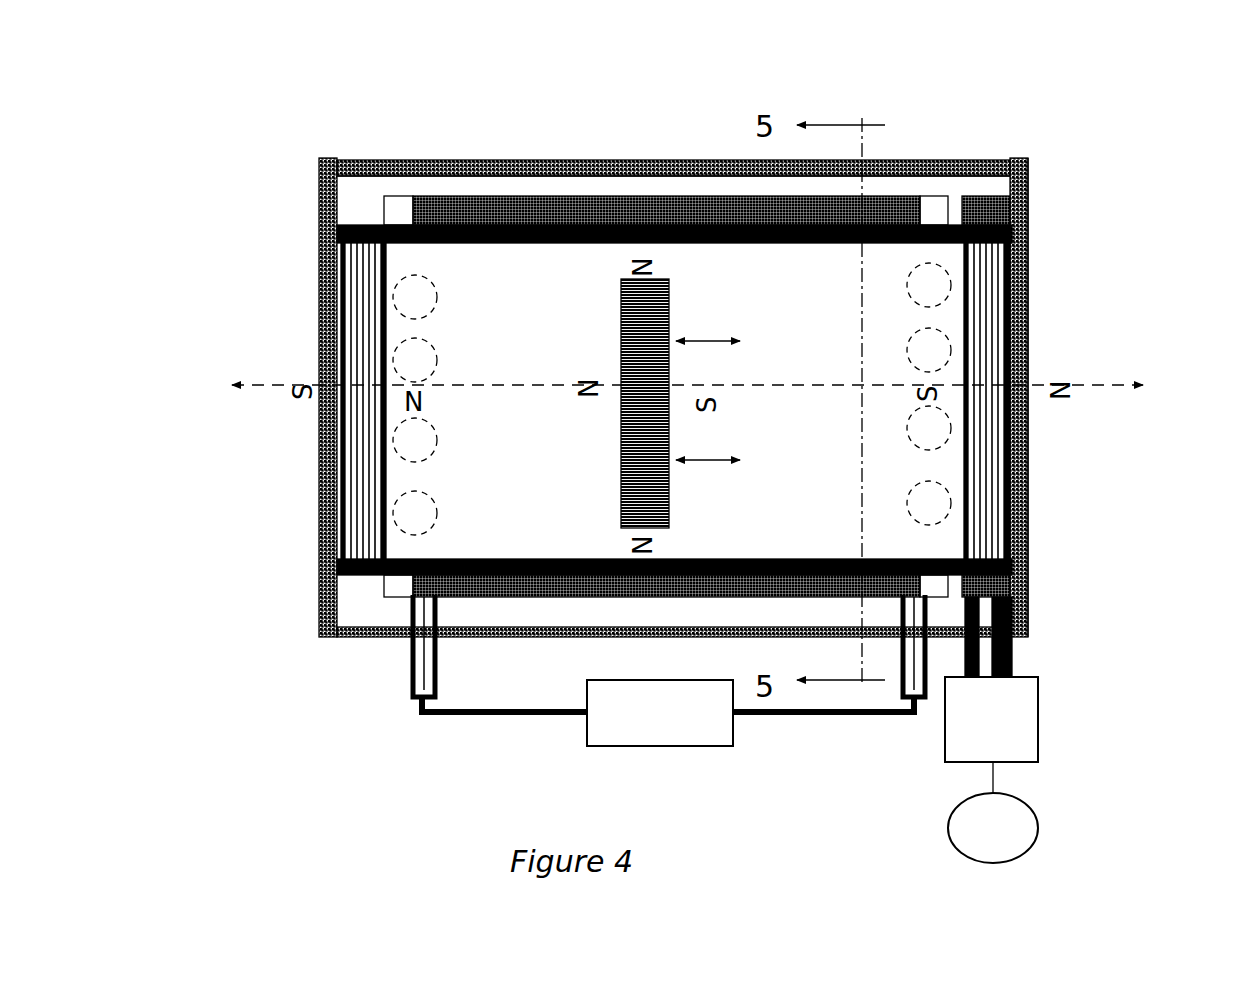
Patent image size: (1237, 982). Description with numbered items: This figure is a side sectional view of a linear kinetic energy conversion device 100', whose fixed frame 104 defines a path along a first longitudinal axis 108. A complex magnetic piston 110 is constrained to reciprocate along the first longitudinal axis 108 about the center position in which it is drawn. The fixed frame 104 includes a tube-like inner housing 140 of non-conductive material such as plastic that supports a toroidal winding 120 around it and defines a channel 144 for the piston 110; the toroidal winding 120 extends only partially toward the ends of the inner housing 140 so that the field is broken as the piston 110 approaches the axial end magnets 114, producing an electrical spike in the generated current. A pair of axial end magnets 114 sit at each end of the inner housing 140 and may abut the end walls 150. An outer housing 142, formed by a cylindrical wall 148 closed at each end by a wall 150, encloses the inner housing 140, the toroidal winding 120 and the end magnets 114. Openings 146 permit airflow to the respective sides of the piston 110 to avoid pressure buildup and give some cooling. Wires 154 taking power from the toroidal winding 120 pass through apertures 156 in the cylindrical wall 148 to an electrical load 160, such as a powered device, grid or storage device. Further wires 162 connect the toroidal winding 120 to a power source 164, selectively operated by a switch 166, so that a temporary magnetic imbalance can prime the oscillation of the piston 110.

The linear kinetic energy conversion device 100' is at (752, 353).
The fixed frame 104 is at (368, 158).
The first longitudinal axis 108 is at (1100, 378).
The complex magnetic piston 110 is at (668, 303).
The axial end magnets 114 is at (360, 325).
The toroidal winding 120 is at (670, 196).
The inner housing 140 is at (903, 243).
The outer housing 142 is at (930, 157).
The channel 144 is at (478, 258).
The openings 146 is at (1028, 300).
The cylindrical wall 148 is at (410, 158).
The wall 150 is at (322, 222).
The wires 154 is at (420, 700).
The apertures 156 is at (420, 640).
The electrical load 160 is at (643, 745).
The wires 162 is at (1015, 648).
The power source 164 is at (1040, 718).
The switch 166 is at (1038, 828).